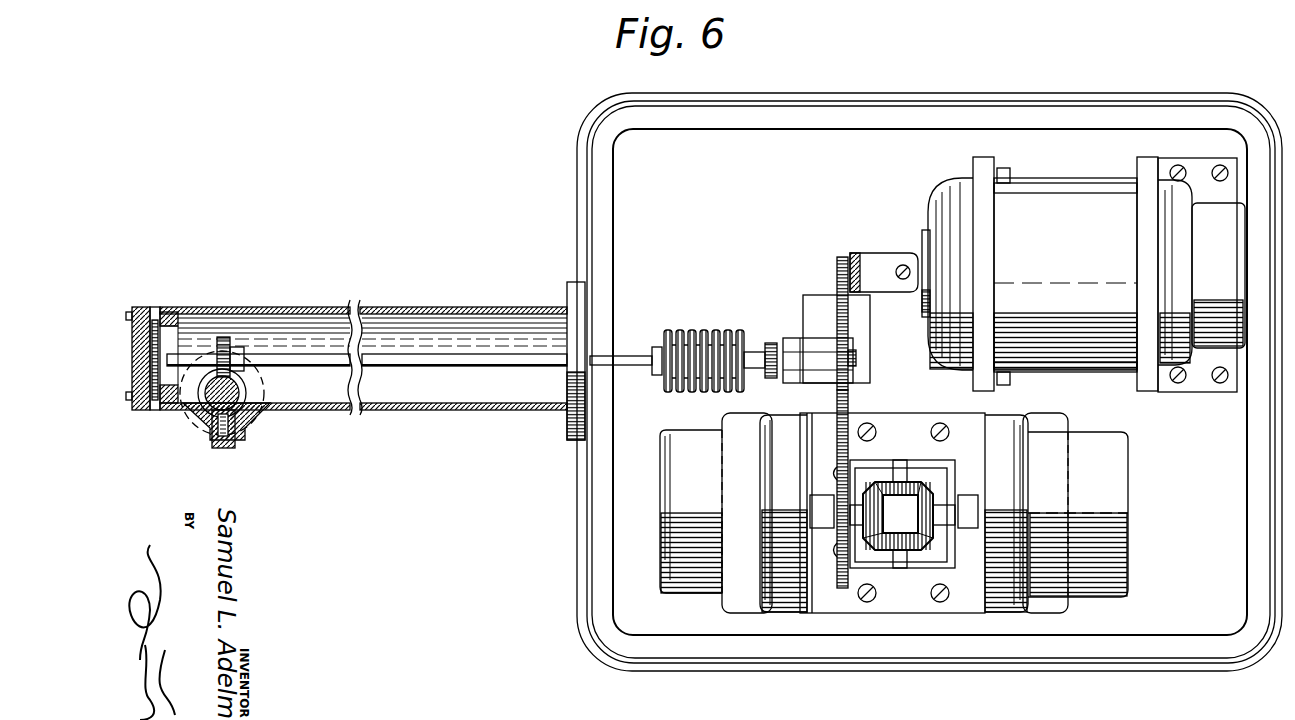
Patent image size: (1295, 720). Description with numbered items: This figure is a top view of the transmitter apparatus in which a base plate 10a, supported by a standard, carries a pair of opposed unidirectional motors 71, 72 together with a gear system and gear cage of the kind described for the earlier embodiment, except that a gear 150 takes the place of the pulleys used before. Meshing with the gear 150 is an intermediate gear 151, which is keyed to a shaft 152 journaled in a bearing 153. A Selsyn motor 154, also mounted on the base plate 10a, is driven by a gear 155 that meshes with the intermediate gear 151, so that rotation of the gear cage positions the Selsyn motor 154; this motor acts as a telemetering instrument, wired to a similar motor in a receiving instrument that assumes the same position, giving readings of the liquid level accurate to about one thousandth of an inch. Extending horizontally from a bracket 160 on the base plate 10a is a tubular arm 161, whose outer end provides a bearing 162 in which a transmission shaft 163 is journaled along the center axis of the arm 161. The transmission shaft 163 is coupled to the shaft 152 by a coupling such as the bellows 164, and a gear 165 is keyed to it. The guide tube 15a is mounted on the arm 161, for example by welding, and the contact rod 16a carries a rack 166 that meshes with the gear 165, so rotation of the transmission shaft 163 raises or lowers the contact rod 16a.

The base plate 10a is at (965, 673).
The guide tube 15a is at (258, 428).
The contact rod 16a is at (198, 425).
The unidirectional motor 71 is at (673, 470).
The unidirectional motor 72 is at (1108, 507).
The gear 150 is at (843, 590).
The intermediate gear 151 is at (852, 400).
The shaft 152 is at (855, 357).
The bearing 153 is at (818, 385).
The Selsyn motor 154 is at (1053, 215).
The gear 155 is at (838, 257).
The bracket 160 is at (566, 428).
The tubular arm 161 is at (372, 306).
The bearing 162 is at (173, 306).
The transmission shaft 163 is at (428, 358).
The bellows 164 is at (688, 330).
The gear 165 is at (228, 336).
The rack 166 is at (247, 352).